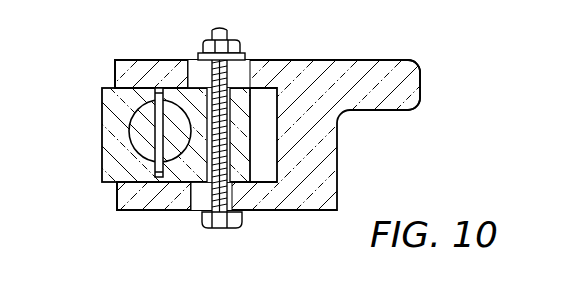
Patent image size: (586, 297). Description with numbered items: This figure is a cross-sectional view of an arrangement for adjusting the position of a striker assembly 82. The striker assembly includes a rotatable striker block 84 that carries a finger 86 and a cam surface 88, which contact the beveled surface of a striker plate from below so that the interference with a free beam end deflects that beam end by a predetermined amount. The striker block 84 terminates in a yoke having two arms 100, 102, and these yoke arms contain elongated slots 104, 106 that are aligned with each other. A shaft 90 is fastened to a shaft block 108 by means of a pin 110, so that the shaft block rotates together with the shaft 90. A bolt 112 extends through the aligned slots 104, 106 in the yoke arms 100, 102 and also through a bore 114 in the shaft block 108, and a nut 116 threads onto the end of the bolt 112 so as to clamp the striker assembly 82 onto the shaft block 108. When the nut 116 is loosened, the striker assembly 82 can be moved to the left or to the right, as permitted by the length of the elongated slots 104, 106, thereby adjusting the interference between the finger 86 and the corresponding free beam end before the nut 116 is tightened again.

The striker assembly 82 is at (362, 37).
The striker block 84 is at (324, 212).
The finger 86 is at (400, 72).
The cam surface 88 is at (418, 110).
The shaft 90 is at (136, 140).
The yoke arm 100 is at (152, 68).
The yoke arm 102 is at (128, 196).
The elongated slot 104 is at (233, 70).
The elongated slot 106 is at (205, 198).
The shaft block 108 is at (113, 165).
The pin 110 is at (148, 106).
The bolt 112 is at (223, 229).
The bore 114 is at (233, 163).
The nut 116 is at (234, 50).